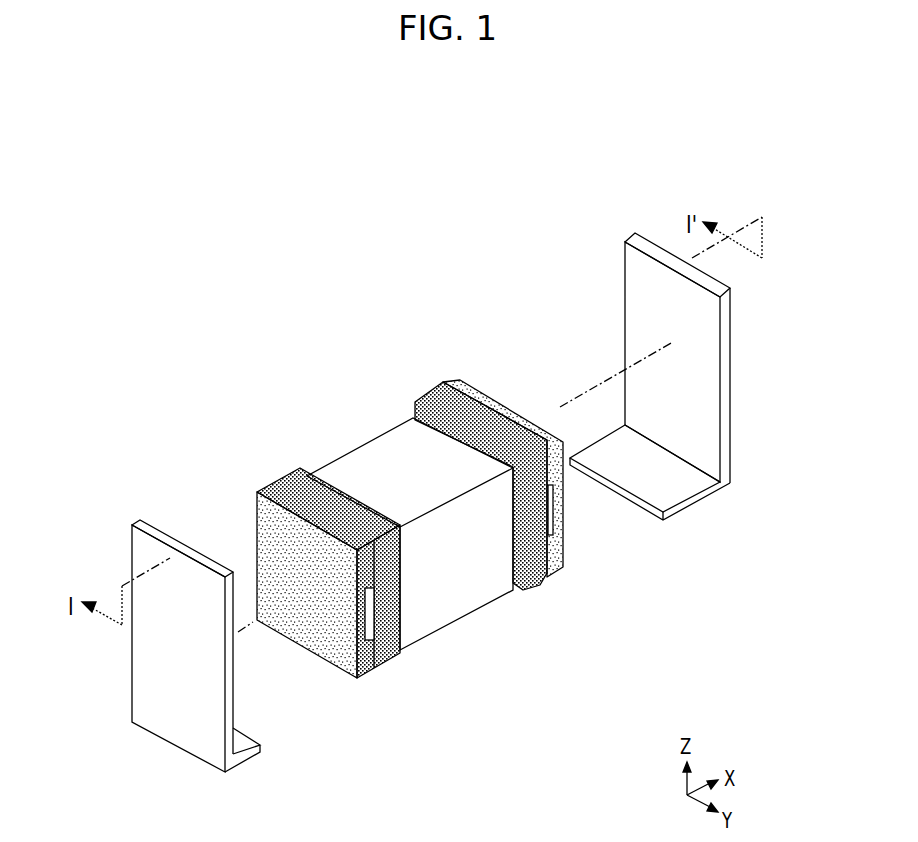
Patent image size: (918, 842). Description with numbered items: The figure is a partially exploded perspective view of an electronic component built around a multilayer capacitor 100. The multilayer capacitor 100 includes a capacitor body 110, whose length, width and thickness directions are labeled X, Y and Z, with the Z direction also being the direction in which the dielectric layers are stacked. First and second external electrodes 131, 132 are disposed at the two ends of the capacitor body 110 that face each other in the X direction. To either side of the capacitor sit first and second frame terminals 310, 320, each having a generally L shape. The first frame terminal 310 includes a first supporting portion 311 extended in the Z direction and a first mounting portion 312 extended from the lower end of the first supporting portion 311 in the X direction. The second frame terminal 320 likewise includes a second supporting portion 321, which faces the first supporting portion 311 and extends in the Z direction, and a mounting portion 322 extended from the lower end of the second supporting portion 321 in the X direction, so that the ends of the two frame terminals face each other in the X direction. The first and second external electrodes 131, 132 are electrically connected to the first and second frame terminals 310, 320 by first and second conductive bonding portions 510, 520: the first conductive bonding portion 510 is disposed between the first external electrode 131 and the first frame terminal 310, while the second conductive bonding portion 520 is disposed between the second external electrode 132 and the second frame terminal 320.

The multilayer capacitor 100 is at (380, 500).
The capacitor body 110 is at (343, 476).
The first external electrode 131 is at (292, 471).
The second external electrode 132 is at (428, 390).
The first conductive bonding portion 510 is at (264, 497).
The second conductive bonding portion 520 is at (467, 390).
The first frame terminal 310 is at (252, 667).
The first supporting portion 311 is at (197, 738).
The first mounting portion 312 is at (240, 746).
The second frame terminal 320 is at (697, 376).
The second supporting portion 321 is at (703, 432).
The mounting portion 322 is at (680, 485).